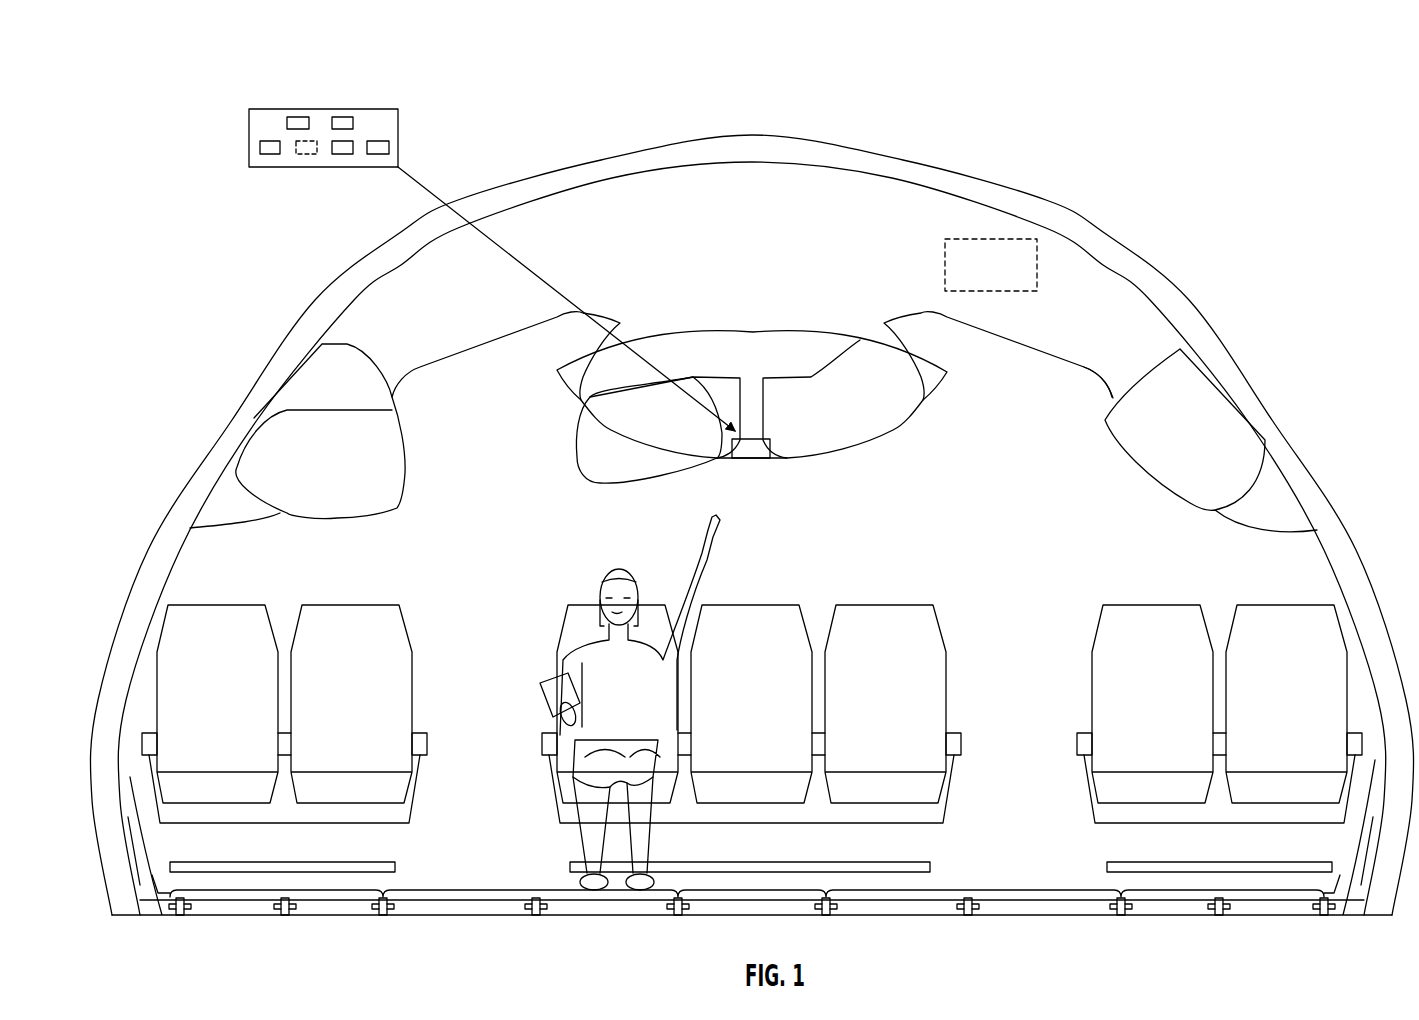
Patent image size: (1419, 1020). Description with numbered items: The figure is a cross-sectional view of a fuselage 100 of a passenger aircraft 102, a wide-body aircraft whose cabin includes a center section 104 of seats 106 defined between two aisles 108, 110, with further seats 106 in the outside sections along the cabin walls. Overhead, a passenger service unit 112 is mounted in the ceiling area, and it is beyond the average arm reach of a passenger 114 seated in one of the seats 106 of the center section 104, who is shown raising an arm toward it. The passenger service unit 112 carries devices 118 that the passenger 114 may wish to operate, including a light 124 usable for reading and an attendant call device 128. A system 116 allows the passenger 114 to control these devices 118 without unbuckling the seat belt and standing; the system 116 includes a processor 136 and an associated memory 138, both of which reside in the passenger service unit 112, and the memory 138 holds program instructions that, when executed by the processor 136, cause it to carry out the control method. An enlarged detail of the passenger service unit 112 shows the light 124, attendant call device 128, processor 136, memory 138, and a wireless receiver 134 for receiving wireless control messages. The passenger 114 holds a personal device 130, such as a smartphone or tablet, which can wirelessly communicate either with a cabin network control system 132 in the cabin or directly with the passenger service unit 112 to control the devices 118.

The fuselage 100 is at (1048, 200).
The passenger aircraft 102 is at (772, 256).
The center section 104 is at (840, 523).
The seats 106 is at (222, 605).
The aisle 108 is at (498, 728).
The aisle 110 is at (1033, 728).
The passenger service unit 112 is at (752, 460).
The passenger 114 is at (608, 571).
The system 116 is at (368, 570).
The devices 118 is at (1110, 566).
The light 124 is at (270, 154).
The attendant call device 128 is at (378, 154).
The personal device 130 is at (541, 691).
The cabin network control system 132 is at (945, 272).
The wireless receiver 134 is at (306, 154).
The processor 136 is at (299, 117).
The memory 138 is at (342, 117).